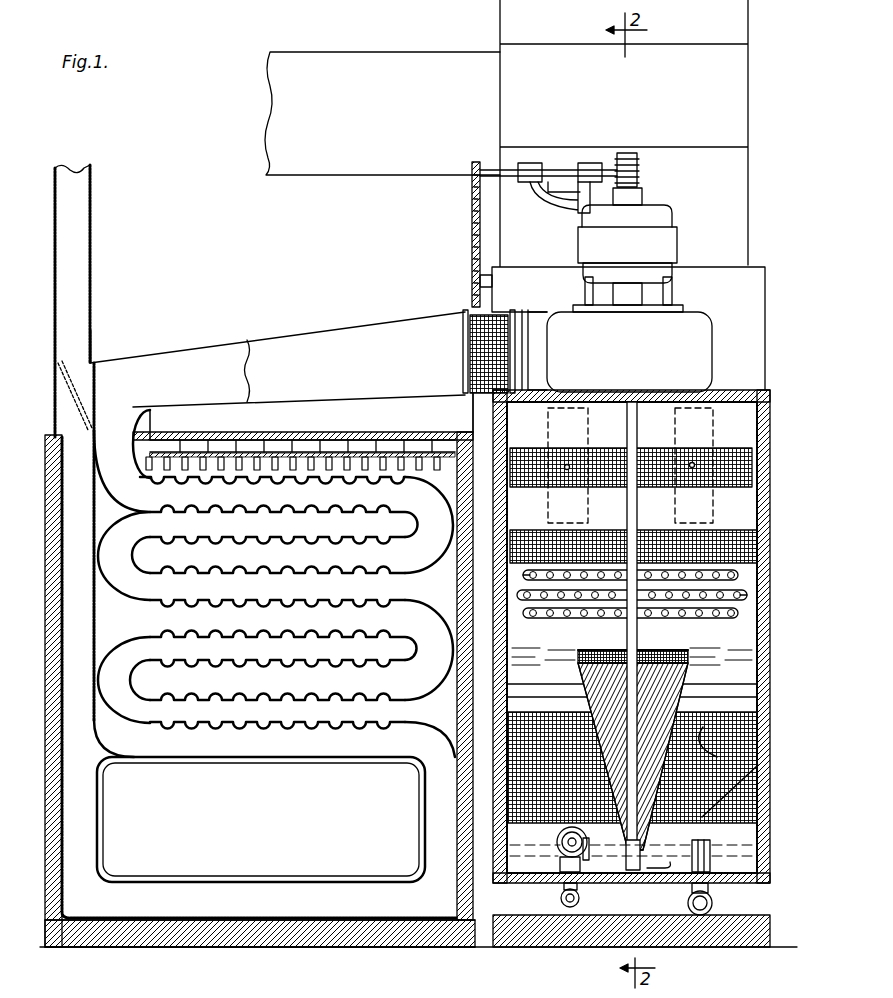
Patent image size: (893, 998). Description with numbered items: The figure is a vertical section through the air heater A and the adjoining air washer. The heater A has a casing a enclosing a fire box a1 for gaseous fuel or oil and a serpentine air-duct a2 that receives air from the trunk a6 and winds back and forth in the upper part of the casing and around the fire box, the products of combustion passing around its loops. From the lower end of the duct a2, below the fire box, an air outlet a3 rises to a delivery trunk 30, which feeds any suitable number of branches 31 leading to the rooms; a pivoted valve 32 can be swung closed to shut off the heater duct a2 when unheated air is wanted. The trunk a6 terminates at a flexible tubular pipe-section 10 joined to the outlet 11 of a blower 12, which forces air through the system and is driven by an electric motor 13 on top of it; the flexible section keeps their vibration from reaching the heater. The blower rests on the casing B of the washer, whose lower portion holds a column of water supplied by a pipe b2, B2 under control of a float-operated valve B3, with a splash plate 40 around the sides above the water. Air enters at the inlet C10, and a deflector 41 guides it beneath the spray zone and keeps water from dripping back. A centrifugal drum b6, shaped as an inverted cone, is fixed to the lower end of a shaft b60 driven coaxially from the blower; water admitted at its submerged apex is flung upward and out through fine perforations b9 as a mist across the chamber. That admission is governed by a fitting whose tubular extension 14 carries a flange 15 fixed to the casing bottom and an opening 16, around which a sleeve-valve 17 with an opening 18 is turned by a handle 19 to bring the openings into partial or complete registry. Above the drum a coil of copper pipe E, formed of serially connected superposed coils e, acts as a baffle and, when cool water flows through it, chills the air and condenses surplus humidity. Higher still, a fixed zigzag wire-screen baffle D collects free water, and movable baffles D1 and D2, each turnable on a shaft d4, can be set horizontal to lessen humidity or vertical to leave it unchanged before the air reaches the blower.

The delivery trunk 30 is at (76, 212).
The branches 31 is at (96, 330).
The valve 32 is at (75, 385).
The air outlet a3 is at (70, 455).
The trunk a6 is at (250, 340).
The air heater A is at (388, 937).
The casing a is at (153, 927).
The serpentine air-duct a2 is at (274, 560).
The fire box a1 is at (261, 819).
The flexible tubular pipe-section 10 is at (477, 405).
The blower outlet 11 is at (532, 323).
The blower 12 is at (629, 348).
The electric motor 13 is at (663, 240).
The tubular extension 14 is at (637, 157).
The flange 15 is at (553, 173).
The opening 16 is at (566, 212).
The sleeve-valve 17 is at (470, 182).
The opening 18 is at (473, 243).
The handle 19 is at (470, 280).
The air washer casing B is at (747, 388).
The movable baffle D2 is at (533, 447).
The movable baffle D1 is at (727, 448).
The fixed baffle D is at (657, 533).
The shaft d4 is at (565, 470).
The coil of copper pipe E is at (677, 622).
The coils e is at (523, 600).
The deflector 41 is at (740, 703).
The inlet C10 is at (757, 757).
The centrifugal drum b6 is at (680, 700).
The fine perforations b9 is at (600, 655).
The shaft b60 is at (632, 428).
The deflector or splash plate 40 is at (507, 840).
The valve B3 is at (563, 860).
The pipe b2 is at (597, 845).
The pipe B2 is at (570, 907).